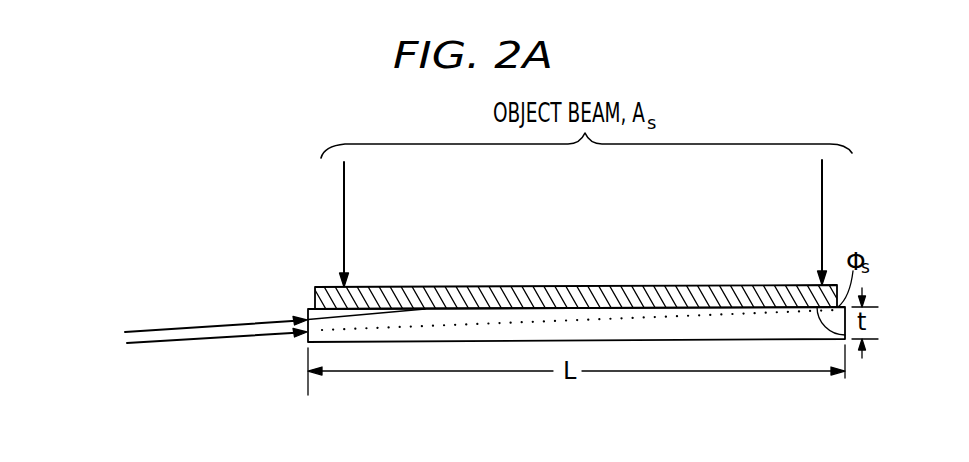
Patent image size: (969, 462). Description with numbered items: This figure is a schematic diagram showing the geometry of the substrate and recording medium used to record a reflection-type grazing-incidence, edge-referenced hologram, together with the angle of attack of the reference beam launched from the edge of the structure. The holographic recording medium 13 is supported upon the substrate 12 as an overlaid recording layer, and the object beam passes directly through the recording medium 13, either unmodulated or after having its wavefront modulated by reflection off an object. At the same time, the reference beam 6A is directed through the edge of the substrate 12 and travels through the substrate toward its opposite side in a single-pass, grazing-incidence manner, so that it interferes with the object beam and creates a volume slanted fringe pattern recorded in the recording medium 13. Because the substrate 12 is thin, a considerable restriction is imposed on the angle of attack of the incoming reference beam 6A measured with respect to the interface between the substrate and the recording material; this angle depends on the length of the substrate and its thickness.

The reference beam 6A is at (173, 344).
The substrate 12 is at (510, 342).
The holographic recording medium 13 is at (766, 284).